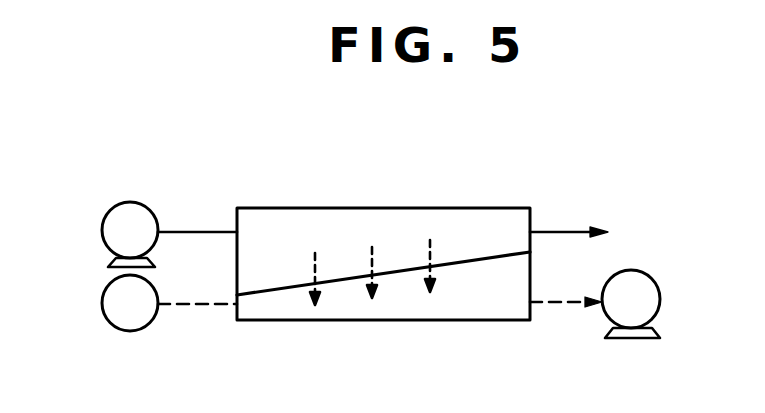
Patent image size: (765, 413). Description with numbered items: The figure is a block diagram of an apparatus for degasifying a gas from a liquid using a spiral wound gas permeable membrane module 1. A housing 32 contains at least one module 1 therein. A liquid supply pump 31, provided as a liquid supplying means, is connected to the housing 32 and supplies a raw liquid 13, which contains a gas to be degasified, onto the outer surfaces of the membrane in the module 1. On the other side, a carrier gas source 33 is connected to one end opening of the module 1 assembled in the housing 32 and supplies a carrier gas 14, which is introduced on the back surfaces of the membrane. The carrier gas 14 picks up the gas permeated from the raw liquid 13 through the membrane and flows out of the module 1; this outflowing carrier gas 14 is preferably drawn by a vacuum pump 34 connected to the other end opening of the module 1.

The spiral wound gas permeable membrane module 1 is at (495, 226).
The raw liquid 13 is at (190, 232).
The carrier gas 14 is at (208, 306).
The liquid supply pump 31 is at (110, 213).
The housing 32 is at (362, 208).
The carrier gas source 33 is at (104, 310).
The vacuum pump 34 is at (648, 303).